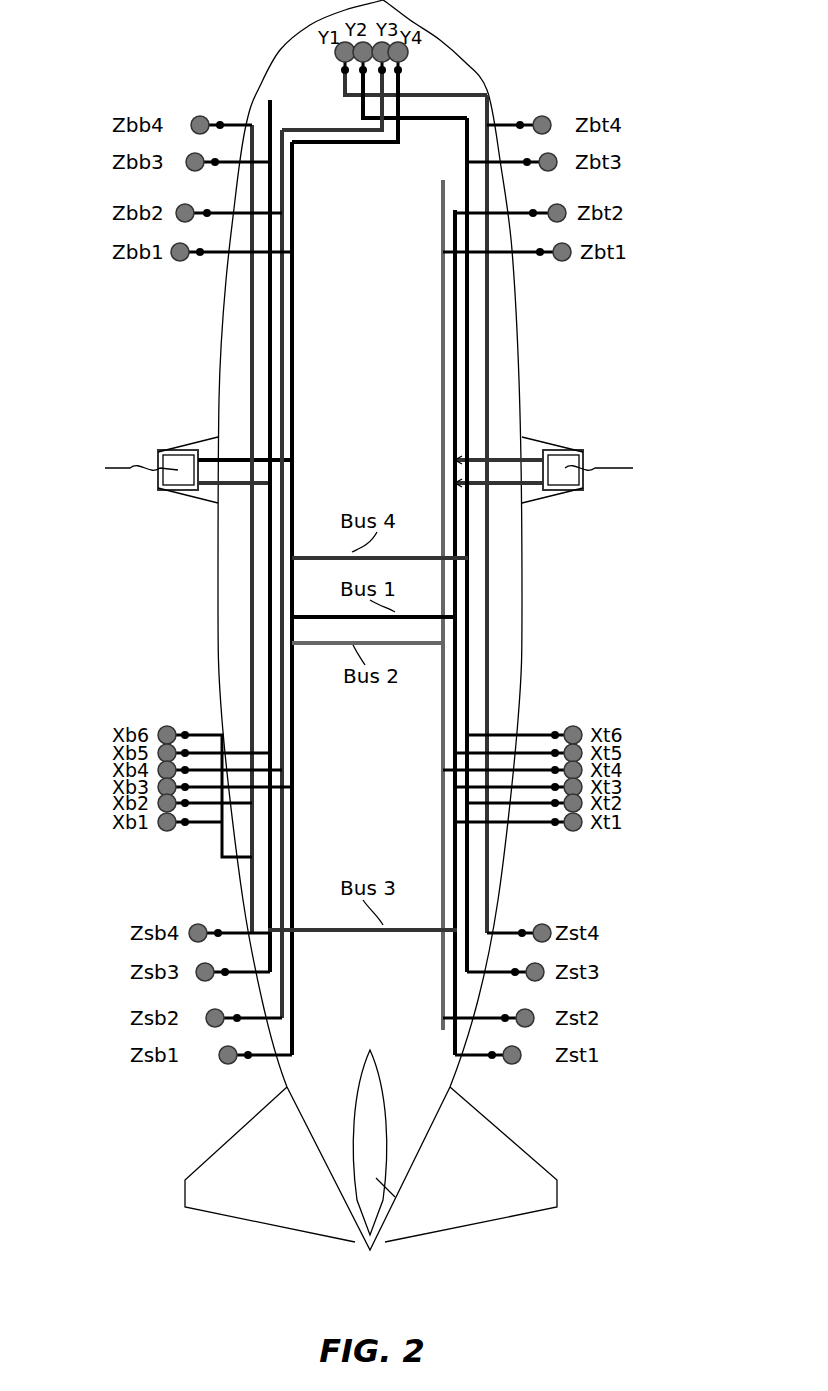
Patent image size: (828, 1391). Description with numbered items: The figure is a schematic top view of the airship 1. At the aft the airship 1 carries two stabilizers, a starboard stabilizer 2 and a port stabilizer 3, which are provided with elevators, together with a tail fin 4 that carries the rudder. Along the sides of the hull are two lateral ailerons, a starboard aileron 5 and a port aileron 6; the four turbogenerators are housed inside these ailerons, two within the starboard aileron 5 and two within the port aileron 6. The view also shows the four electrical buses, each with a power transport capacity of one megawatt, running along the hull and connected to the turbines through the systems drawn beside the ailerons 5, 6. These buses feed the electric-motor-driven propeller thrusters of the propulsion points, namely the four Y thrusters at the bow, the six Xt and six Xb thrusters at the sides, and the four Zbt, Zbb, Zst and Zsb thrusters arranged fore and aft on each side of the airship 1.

The airship 1 is at (652, 1036).
The starboard stabilizer 2 is at (520, 1142).
The port stabilizer 3 is at (255, 1107).
The tail fin 4 is at (380, 1182).
The starboard aileron 5 is at (557, 442).
The port aileron 6 is at (192, 442).